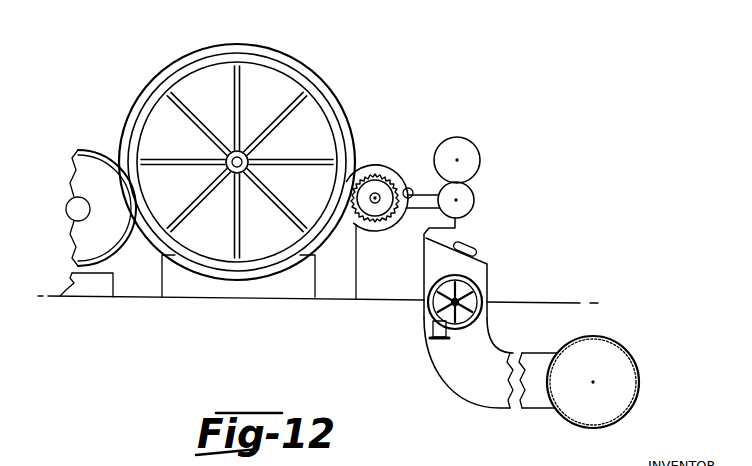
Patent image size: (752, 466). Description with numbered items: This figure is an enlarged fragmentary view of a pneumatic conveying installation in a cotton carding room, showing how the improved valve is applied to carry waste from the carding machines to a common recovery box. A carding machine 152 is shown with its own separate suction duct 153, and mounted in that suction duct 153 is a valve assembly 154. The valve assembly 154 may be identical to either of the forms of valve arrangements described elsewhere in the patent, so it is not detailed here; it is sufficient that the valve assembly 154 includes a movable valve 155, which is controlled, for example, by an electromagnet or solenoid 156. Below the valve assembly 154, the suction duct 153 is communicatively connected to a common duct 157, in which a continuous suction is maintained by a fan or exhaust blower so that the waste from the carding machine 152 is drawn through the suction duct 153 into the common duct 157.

The carding machine 152 is at (238, 47).
The suction duct 153 is at (533, 416).
The valve assembly 154 is at (462, 279).
The movable valve 155 is at (484, 309).
The electromagnet or solenoid 156 is at (436, 330).
The common duct 157 is at (638, 366).